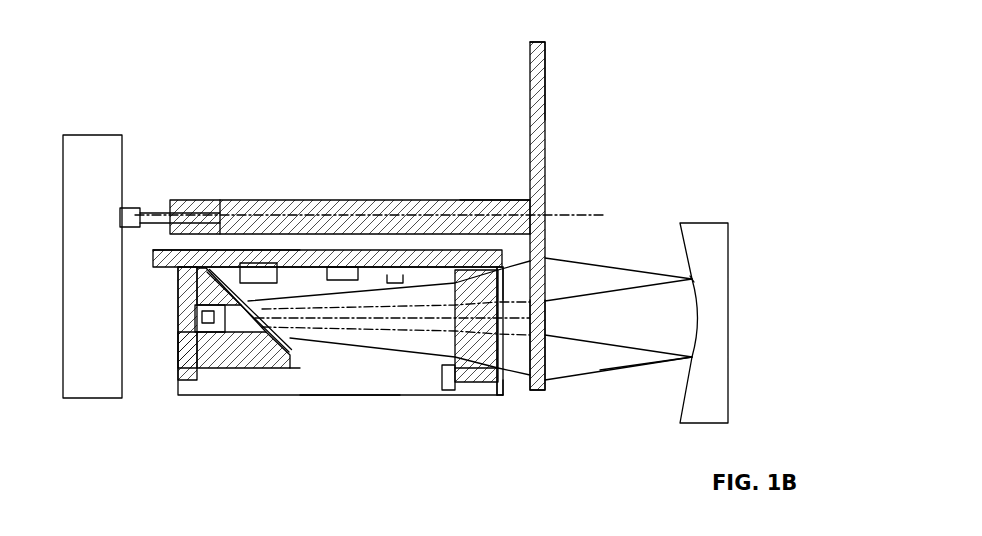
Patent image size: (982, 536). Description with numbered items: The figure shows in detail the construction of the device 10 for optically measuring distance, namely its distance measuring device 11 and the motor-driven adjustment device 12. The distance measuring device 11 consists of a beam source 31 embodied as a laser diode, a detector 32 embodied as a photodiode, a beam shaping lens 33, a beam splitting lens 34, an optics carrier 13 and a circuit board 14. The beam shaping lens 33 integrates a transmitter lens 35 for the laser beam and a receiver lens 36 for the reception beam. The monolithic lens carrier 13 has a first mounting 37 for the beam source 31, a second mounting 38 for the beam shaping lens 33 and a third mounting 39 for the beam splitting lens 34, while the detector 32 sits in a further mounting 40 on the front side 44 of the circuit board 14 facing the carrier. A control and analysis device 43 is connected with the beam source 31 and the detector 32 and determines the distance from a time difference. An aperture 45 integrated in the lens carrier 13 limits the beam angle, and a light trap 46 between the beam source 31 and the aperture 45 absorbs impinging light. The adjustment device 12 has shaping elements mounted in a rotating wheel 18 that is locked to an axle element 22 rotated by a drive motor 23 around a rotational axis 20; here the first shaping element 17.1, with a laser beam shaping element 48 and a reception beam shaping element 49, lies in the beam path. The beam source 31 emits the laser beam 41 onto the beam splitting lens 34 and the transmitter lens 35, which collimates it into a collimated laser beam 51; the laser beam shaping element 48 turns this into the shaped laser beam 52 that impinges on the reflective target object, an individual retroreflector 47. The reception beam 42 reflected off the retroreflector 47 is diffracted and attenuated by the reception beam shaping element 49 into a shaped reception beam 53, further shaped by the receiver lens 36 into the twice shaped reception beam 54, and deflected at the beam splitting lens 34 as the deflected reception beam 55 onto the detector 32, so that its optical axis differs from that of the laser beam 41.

The device for optically measuring distance 10 is at (195, 90).
The distance measuring device 11 is at (170, 416).
The adjustment device 12 is at (562, 84).
The optics carrier 13 is at (284, 362).
The circuit board 14 is at (429, 200).
The first shaping element 17.1 is at (537, 393).
The rotating wheel 18 is at (530, 74).
The rotational axis 20 is at (580, 213).
The axle element 22 is at (152, 205).
The drive motor 23 is at (90, 152).
The beam source 31 is at (192, 322).
The detector 32 is at (255, 258).
The beam shaping lens 33 is at (473, 200).
The beam splitting lens 34 is at (180, 290).
The transmitter lens 35 is at (455, 316).
The receiver lens 36 is at (441, 370).
The first mounting 37 is at (197, 372).
The second mounting 38 is at (497, 370).
The third mounting 39 is at (216, 262).
The mounting 40 is at (259, 270).
The laser beam 41 is at (311, 325).
The reception beam 42 is at (638, 370).
The control and analysis device 43 is at (342, 275).
The front side 44 is at (388, 278).
The aperture 45 is at (259, 370).
The light trap 46 is at (238, 370).
The retroreflector 47 is at (707, 240).
The laser beam shaping element 48 is at (548, 316).
The reception beam shaping element 49 is at (548, 279).
The collimated laser beam 51 is at (514, 305).
The shaped laser beam 52 is at (690, 280).
The shaped reception beam 53 is at (512, 360).
The twice shaped reception beam 54 is at (357, 345).
The deflected reception beam 55 is at (266, 294).